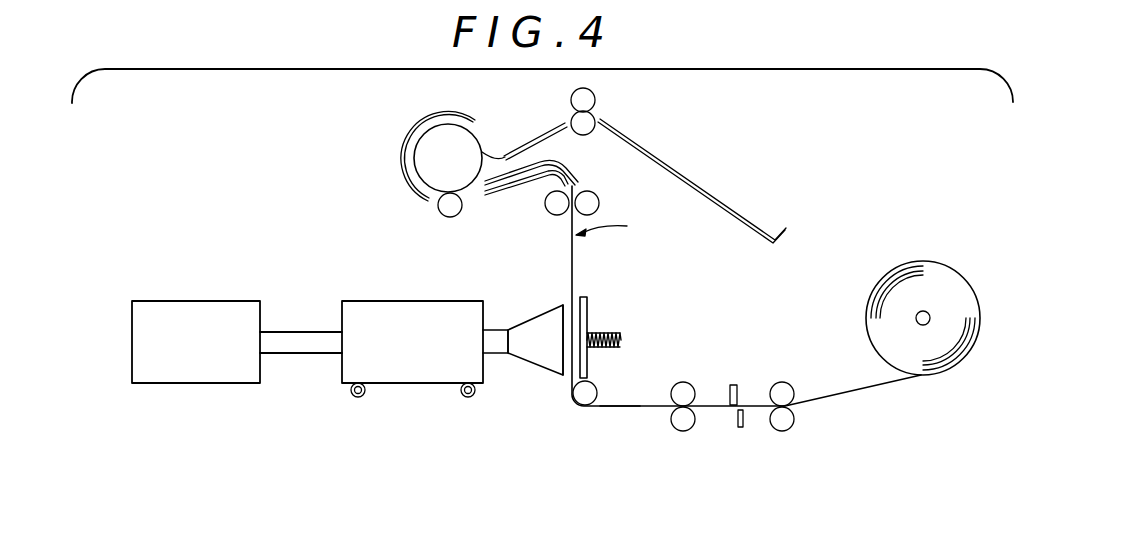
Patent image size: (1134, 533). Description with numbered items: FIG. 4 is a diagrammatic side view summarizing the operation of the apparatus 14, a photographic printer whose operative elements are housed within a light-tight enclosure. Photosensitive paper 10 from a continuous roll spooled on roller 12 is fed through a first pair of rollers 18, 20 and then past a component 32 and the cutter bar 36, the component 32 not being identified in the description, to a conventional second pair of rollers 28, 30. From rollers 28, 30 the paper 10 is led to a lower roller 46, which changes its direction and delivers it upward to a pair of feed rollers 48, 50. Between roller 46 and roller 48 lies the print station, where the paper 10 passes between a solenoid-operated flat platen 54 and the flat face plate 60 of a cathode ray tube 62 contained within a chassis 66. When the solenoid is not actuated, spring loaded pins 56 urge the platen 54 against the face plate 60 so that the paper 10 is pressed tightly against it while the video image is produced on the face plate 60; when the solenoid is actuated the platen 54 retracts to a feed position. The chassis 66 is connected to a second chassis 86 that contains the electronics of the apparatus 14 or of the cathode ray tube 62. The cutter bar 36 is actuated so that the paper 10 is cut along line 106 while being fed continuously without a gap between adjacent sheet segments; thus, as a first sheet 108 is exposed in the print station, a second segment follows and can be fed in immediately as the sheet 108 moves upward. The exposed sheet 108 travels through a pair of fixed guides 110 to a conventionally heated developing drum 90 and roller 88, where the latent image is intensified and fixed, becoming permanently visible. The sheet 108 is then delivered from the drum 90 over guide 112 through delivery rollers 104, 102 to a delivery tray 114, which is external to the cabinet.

The paper 10 is at (575, 248).
The roller 12 is at (926, 310).
The apparatus 14 is at (191, 69).
The roller 18 is at (790, 426).
The roller 20 is at (789, 384).
The roller 28 is at (686, 384).
The roller 30 is at (686, 430).
The web guide 32 is at (734, 384).
The cutter bar 36 is at (741, 428).
The lower roller 46 is at (584, 405).
The feed roller 48 is at (597, 200).
The feed roller 50 is at (546, 205).
The flat platen 54 is at (589, 309).
The spring loaded pins 56 is at (621, 334).
The flat face plate 60 is at (566, 305).
The cathode ray tube 62 is at (523, 322).
The chassis 66 is at (378, 301).
The second chassis 86 is at (182, 301).
The roller 88 is at (442, 214).
The developing drum 90 is at (474, 136).
The delivery roller 102 is at (590, 98).
The delivery roller 104 is at (594, 124).
The cut line 106 is at (607, 406).
The first sheet 108 is at (623, 230).
The fixed guides 110 is at (568, 168).
The guide 112 is at (540, 134).
The delivery tray 114 is at (719, 207).